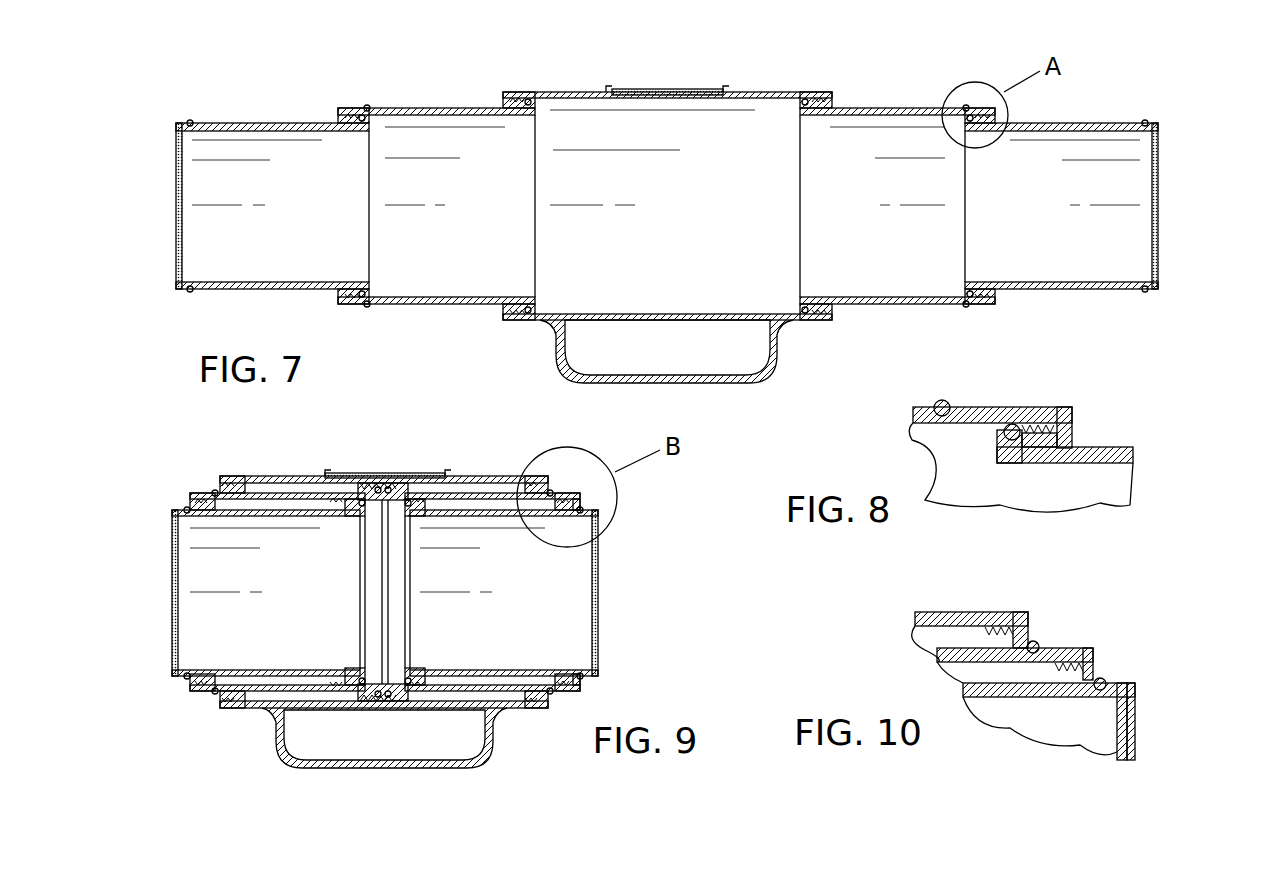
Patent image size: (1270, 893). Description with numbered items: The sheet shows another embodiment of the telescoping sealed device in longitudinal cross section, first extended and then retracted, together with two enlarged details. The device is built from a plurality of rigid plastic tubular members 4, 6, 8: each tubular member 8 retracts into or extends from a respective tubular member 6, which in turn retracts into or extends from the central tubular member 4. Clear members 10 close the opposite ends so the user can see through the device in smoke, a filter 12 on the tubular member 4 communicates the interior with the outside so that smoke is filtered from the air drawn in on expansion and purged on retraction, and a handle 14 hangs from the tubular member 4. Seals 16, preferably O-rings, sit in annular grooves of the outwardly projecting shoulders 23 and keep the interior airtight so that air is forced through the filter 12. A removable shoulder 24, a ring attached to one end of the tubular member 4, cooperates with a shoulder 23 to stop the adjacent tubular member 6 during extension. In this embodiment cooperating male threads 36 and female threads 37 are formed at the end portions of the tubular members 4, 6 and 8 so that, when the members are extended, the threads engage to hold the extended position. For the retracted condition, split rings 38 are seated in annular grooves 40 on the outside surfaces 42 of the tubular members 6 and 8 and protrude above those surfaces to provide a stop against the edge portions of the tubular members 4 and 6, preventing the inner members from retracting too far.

In FIG. 7, the tubular member 4 is at (682, 176).
In FIG. 9, the tubular member 4 is at (458, 476).
In FIG. 10, the tubular member 4 is at (939, 596).
In FIG. 7, the tubular member 6 is at (424, 107).
In FIG. 9, the tubular member 6 is at (265, 500).
In FIG. 8, the tubular member 6 is at (980, 391).
In FIG. 10, the tubular member 6 is at (1060, 648).
In FIG. 7, the tubular member 8 is at (660, 175).
In FIG. 9, the tubular member 8 is at (386, 593).
In FIG. 8, the tubular member 8 is at (1065, 447).
In FIG. 10, the tubular member 8 is at (1072, 690).
In FIG. 7, the clear member 10 is at (176, 207).
In FIG. 9, the clear member 10 is at (173, 600).
In FIG. 7, the filter 12 is at (667, 89).
In FIG. 9, the filter 12 is at (335, 474).
In FIG. 7, the handle 14 is at (776, 356).
In FIG. 9, the handle 14 is at (483, 758).
In FIG. 7, the seal 16 is at (366, 105).
In FIG. 9, the seal 16 is at (362, 508).
In FIG. 8, the seal 16 is at (1000, 450).
In FIG. 8, the outwardly projecting shoulder 23 is at (1036, 448).
In FIG. 7, the removable shoulder 24 is at (834, 100).
In FIG. 10, the removable shoulder 24 is at (1025, 640).
In FIG. 7, the male threads 36 is at (641, 173).
In FIG. 9, the male threads 36 is at (366, 486).
In FIG. 8, the male threads 36 is at (1061, 392).
In FIG. 7, the female threads 37 is at (352, 108).
In FIG. 9, the female threads 37 is at (235, 480).
In FIG. 8, the female threads 37 is at (1045, 428).
In FIG. 10, the female threads 37 is at (1000, 630).
In FIG. 7, the split ring 38 is at (190, 121).
In FIG. 9, the split ring 38 is at (186, 507).
In FIG. 8, the split ring 38 is at (943, 400).
In FIG. 10, the split ring 38 is at (1104, 680).
In FIG. 8, the annular groove 40 is at (933, 434).
In FIG. 9, the outside surface 42 is at (582, 500).
In FIG. 8, the outside surface 42 is at (990, 406).
In FIG. 10, the outside surface 42 is at (1090, 650).